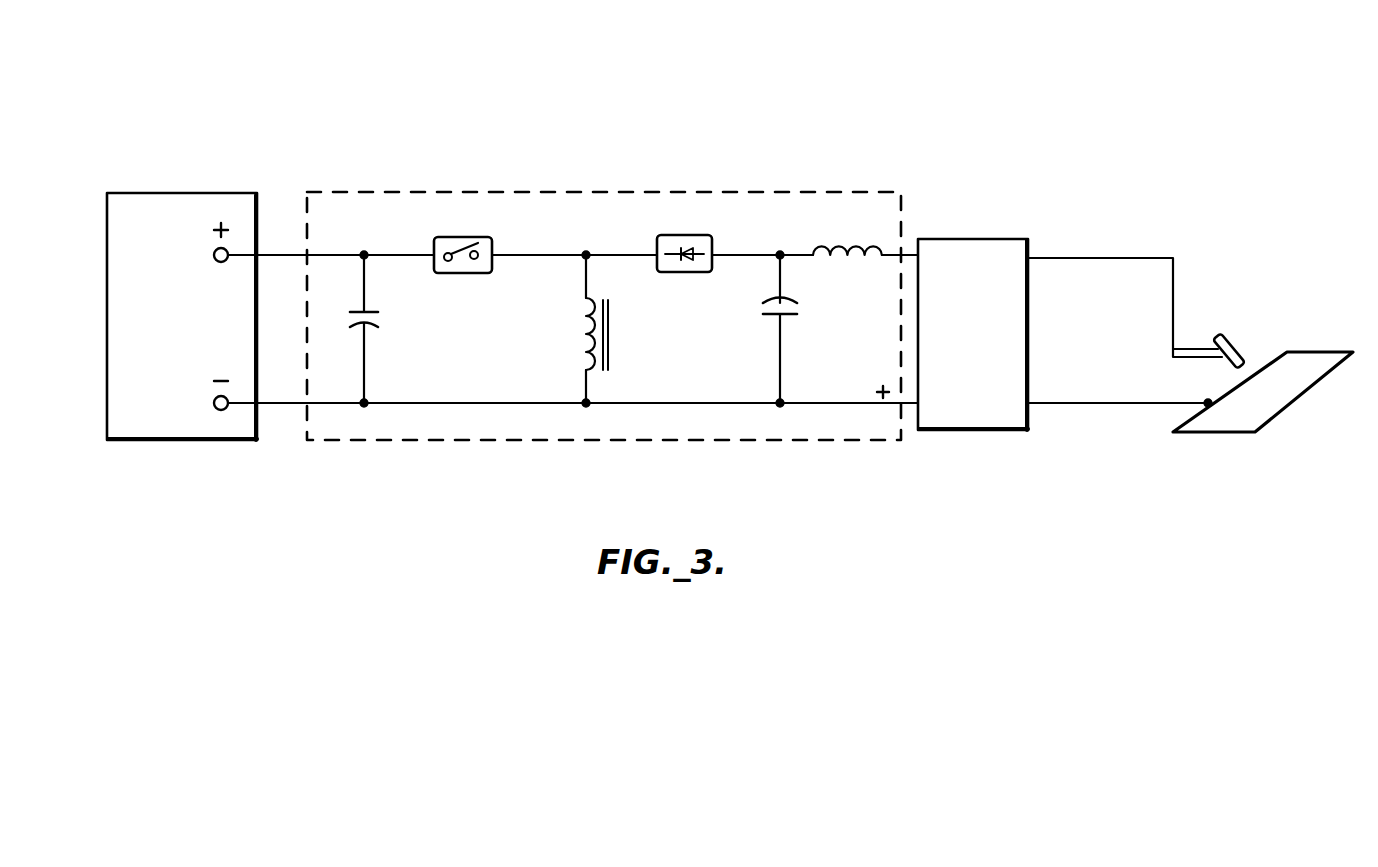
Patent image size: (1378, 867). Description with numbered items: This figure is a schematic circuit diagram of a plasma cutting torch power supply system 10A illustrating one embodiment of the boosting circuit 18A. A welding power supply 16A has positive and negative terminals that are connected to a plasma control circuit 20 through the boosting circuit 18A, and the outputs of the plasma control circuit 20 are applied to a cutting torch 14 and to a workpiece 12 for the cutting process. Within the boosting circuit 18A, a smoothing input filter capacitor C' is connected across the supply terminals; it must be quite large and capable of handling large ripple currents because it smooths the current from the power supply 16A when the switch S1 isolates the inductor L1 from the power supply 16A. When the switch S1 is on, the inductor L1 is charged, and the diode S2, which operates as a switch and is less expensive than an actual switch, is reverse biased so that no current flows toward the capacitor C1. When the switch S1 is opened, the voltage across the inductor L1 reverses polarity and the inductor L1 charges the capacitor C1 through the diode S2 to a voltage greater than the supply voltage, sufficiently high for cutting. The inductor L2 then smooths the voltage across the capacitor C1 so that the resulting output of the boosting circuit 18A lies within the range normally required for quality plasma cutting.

The plasma arc system 10A is at (300, 82).
The workpiece 12 is at (1195, 433).
The cutting torch 14 is at (1222, 333).
The power supply 16A is at (233, 192).
The boosting circuit 18A is at (752, 190).
The plasma control circuit 20 is at (1003, 238).
The switch S1 is at (463, 240).
The diode S2 is at (684, 239).
The smoothing input filter capacitor C' is at (377, 329).
The capacitor C1 is at (795, 329).
The inductor L1 is at (610, 329).
The inductor L2 is at (847, 267).